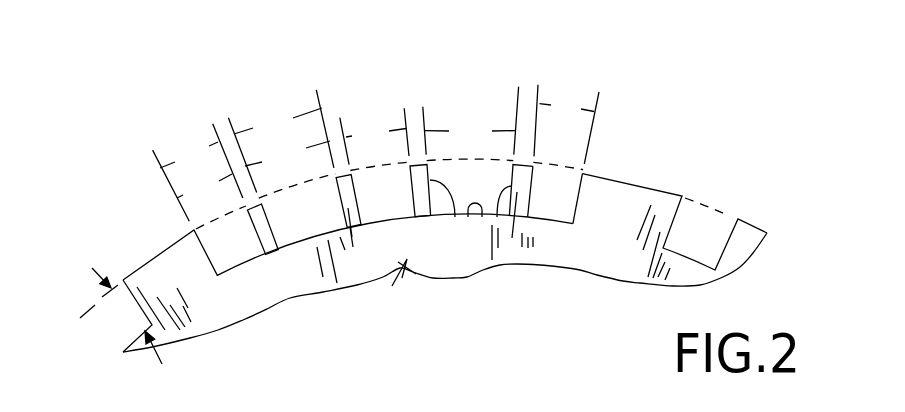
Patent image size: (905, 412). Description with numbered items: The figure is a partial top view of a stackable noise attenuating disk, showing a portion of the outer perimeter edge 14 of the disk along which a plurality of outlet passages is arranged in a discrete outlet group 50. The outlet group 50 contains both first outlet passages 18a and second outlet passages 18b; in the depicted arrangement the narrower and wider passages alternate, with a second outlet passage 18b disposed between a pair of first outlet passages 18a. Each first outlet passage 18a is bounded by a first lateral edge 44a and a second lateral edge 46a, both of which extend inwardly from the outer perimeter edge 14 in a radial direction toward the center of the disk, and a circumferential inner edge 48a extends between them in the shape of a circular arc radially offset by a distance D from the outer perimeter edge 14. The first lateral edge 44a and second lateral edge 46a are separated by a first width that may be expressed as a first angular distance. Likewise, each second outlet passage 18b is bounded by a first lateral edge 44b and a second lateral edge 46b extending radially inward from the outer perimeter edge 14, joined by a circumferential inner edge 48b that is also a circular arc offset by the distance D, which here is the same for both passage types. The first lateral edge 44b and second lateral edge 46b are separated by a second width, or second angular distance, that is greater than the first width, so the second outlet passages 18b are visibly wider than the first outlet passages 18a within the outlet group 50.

The outer perimeter edge 14 is at (165, 243).
The outlet group 50 is at (484, 87).
The first outlet passage 18a is at (235, 250).
The second outlet passage 18b is at (303, 220).
The first lateral edge 44a is at (573, 205).
The first lateral edge 44b is at (504, 208).
The second lateral edge 46a is at (533, 181).
The second lateral edge 46b is at (460, 203).
The circumferential inner edge 48a is at (528, 217).
The circumferential inner edge 48b is at (479, 206).